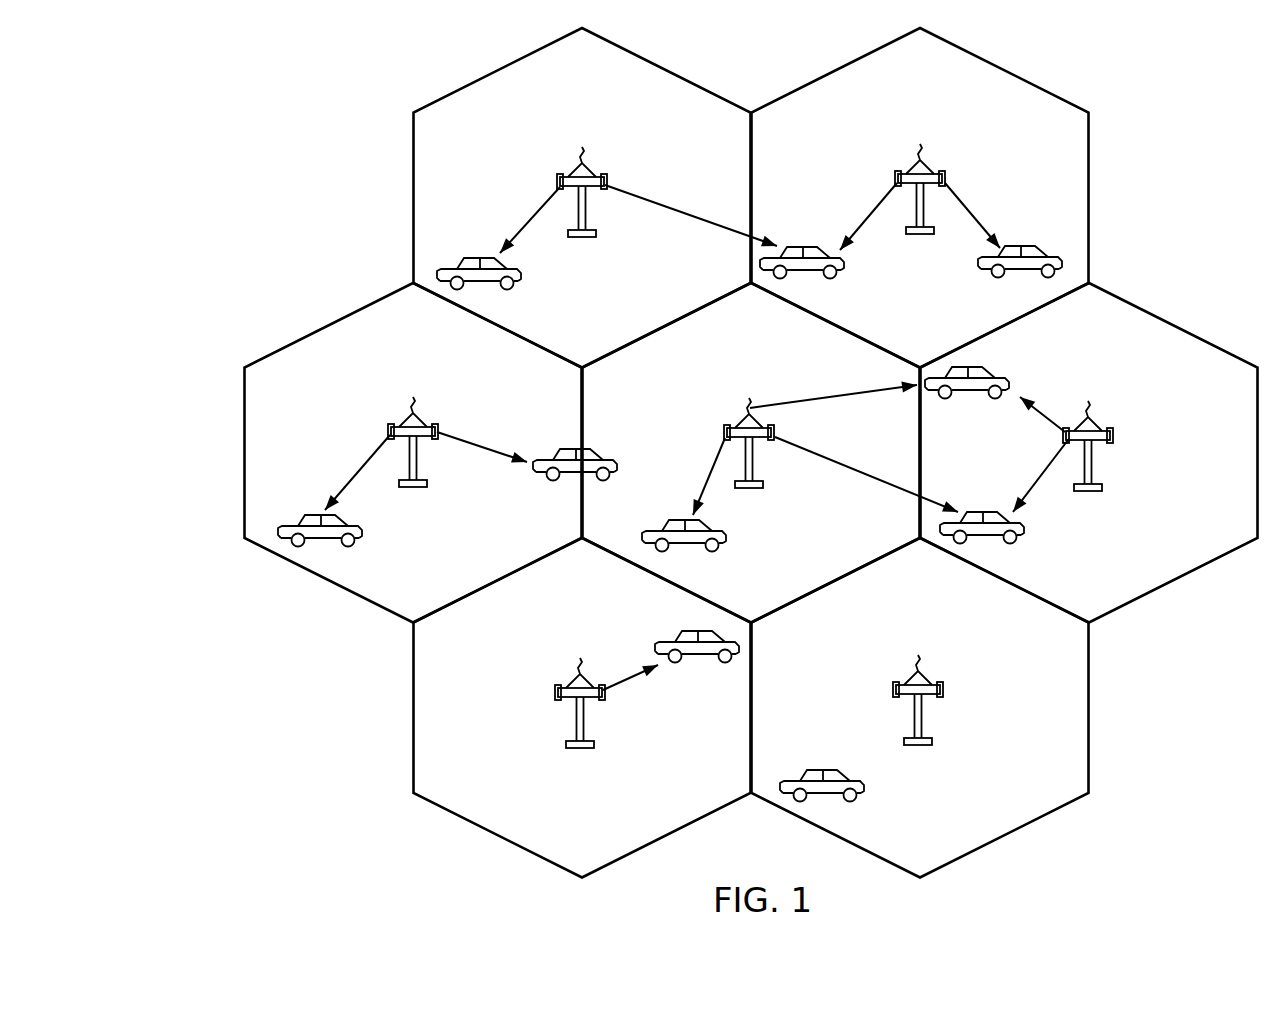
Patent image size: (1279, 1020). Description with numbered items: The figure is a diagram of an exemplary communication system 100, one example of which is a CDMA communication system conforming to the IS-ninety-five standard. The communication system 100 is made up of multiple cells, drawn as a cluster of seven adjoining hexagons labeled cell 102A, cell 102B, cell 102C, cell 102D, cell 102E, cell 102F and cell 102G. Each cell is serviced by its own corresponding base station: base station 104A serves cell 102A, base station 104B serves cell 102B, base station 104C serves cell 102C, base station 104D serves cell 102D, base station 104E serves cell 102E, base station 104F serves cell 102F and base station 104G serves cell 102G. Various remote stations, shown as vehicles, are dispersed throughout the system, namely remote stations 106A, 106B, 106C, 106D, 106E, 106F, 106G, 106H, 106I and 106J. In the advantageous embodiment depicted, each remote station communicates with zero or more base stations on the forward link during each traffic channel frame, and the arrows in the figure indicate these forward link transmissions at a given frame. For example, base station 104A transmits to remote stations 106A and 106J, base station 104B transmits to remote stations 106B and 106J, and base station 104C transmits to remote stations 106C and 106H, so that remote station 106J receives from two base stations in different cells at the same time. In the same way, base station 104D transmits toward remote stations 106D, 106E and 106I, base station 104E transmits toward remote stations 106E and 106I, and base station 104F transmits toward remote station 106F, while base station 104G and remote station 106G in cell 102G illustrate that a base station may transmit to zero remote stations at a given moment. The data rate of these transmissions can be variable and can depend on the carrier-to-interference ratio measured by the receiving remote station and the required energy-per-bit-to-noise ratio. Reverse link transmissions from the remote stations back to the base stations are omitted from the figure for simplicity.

The communication system 100 is at (168, 114).
The cell 102A is at (476, 80).
The cell 102B is at (1028, 80).
The cell 102C is at (332, 320).
The cell 102D is at (774, 338).
The cell 102E is at (1170, 326).
The cell 102F is at (452, 815).
The cell 102G is at (1050, 815).
The base station 104A is at (585, 147).
The base station 104B is at (923, 145).
The base station 104C is at (416, 397).
The base station 104D is at (728, 427).
The base station 104E is at (1091, 401).
The base station 104F is at (583, 658).
The base station 104G is at (921, 655).
The remote station 106A is at (520, 284).
The remote station 106B is at (1032, 246).
The remote station 106C is at (364, 540).
The remote station 106D is at (728, 540).
The remote station 106E is at (970, 396).
The remote station 106F is at (702, 663).
The remote station 106G is at (866, 795).
The remote station 106H is at (536, 473).
The remote station 106I is at (1028, 538).
The remote station 106J is at (804, 247).